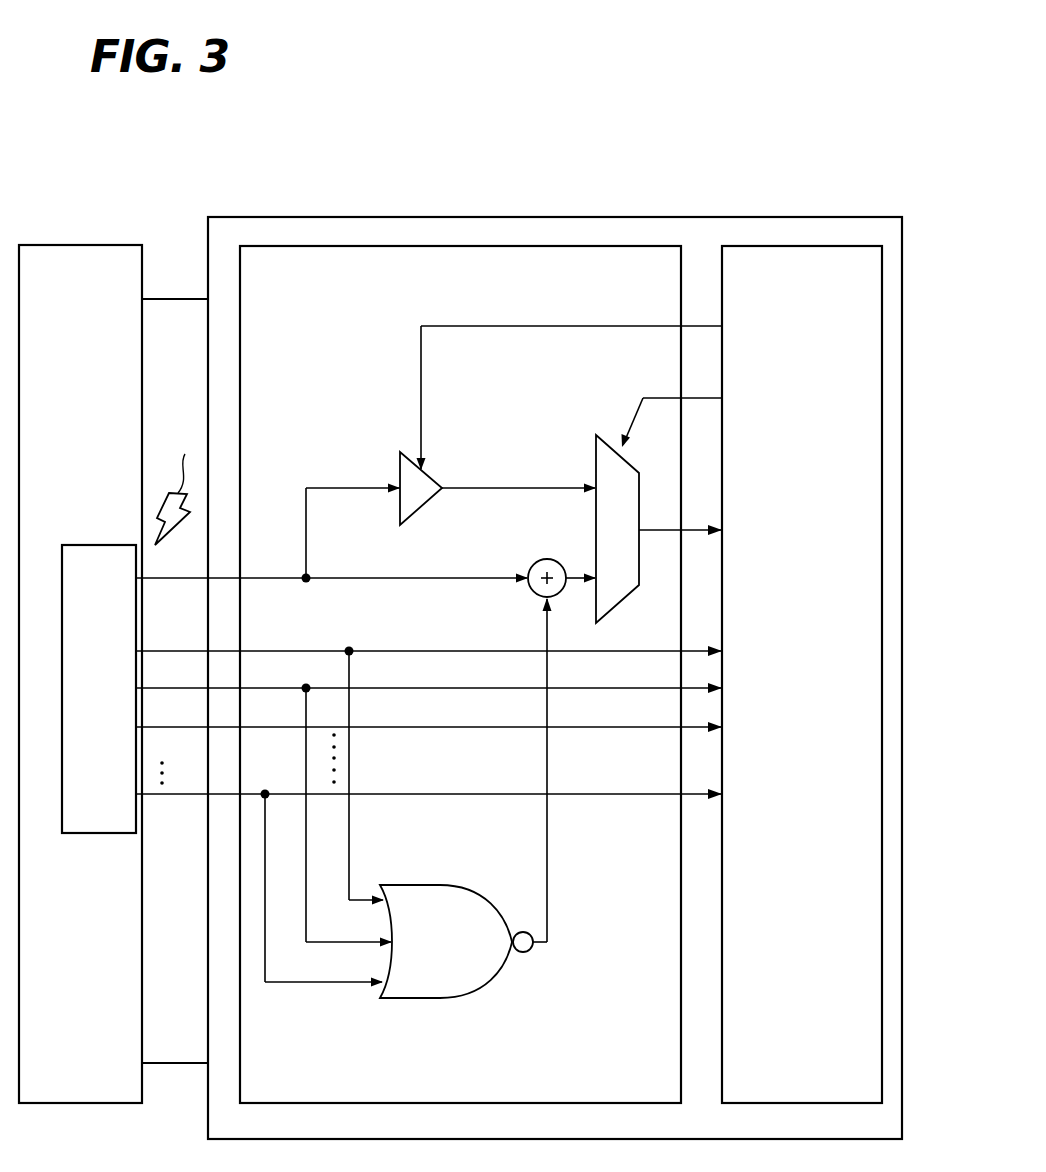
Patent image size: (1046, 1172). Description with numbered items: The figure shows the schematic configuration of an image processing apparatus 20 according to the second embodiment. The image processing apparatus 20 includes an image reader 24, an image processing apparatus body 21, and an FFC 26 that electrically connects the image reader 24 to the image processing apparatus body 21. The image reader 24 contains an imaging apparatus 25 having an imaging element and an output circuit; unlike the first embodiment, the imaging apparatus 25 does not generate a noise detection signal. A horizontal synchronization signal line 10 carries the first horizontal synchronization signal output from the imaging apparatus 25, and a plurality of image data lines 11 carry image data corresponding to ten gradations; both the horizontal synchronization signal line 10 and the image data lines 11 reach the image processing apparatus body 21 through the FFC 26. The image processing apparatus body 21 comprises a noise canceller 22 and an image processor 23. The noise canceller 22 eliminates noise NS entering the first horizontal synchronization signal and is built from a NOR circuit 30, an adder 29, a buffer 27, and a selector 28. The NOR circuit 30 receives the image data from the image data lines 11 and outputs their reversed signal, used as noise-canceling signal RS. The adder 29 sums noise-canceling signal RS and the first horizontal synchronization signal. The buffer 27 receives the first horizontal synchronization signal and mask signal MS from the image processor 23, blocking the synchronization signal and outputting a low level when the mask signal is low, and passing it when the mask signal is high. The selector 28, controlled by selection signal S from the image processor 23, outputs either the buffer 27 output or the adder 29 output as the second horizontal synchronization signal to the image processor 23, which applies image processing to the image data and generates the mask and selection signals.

The image processing apparatus 20 is at (58, 114).
The image processing apparatus body 21 is at (413, 217).
The noise canceller 22 is at (576, 246).
The image processor 23 is at (800, 246).
The image reader 24 is at (96, 245).
The imaging apparatus 25 is at (106, 545).
The FFC 26 is at (182, 299).
The buffer 27 is at (433, 477).
The selector 28 is at (605, 440).
The adder 29 is at (548, 559).
The NOR circuit 30 is at (440, 885).
The horizontal synchronization signal line 10 is at (193, 578).
The image data line 11 is at (193, 651).